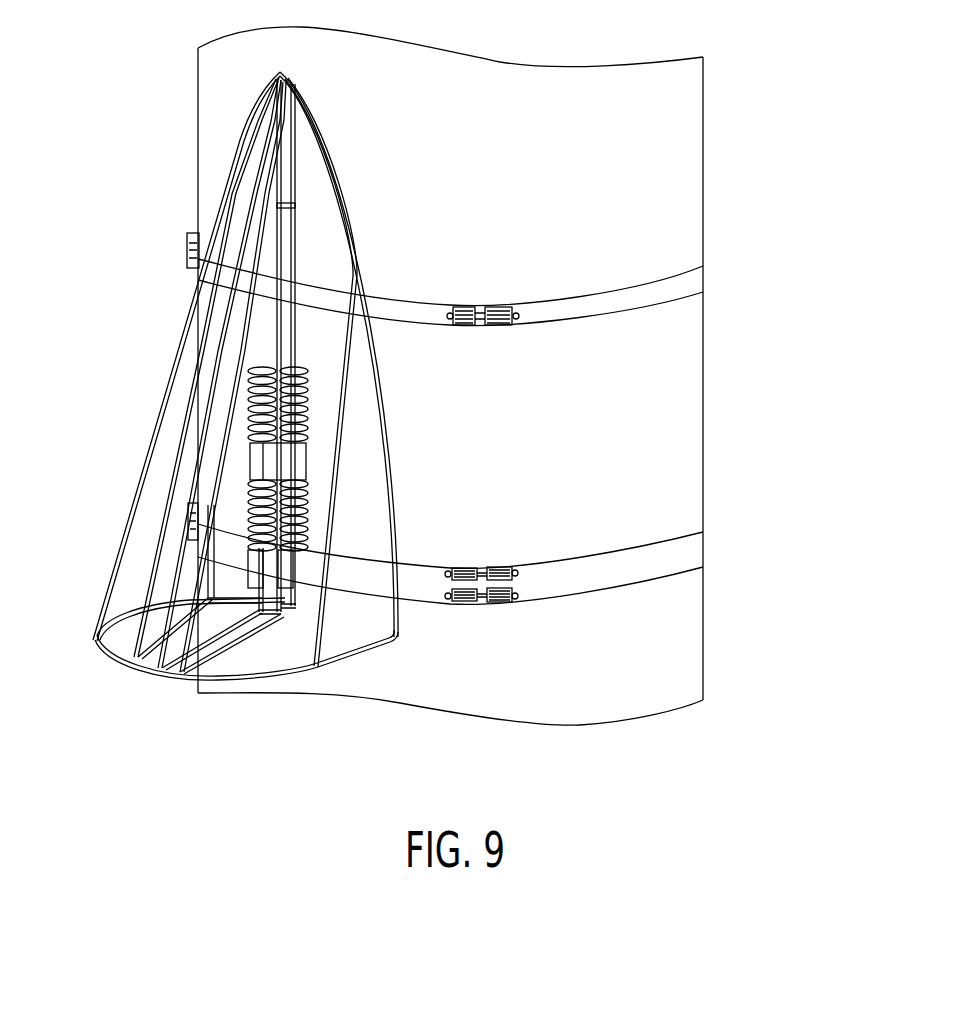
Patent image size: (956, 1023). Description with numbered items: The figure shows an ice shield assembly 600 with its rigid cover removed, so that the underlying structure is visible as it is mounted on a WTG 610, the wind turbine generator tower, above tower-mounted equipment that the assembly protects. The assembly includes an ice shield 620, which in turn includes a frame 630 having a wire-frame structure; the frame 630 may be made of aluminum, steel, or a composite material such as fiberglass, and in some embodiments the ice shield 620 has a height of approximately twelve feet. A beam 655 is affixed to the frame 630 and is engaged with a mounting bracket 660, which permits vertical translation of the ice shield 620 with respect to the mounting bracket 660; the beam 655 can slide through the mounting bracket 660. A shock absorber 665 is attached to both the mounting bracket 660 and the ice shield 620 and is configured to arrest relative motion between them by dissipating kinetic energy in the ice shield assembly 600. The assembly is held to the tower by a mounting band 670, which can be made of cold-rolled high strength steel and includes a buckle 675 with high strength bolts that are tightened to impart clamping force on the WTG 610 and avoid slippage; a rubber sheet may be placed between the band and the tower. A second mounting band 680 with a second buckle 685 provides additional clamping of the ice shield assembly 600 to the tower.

The ice shield assembly 600 is at (420, 386).
The WTG 610 is at (633, 158).
The ice shield 620 is at (229, 376).
The frame 630 is at (247, 178).
The beam 655 is at (289, 256).
The shock absorber 665 is at (307, 393).
The mounting bracket 660 is at (207, 553).
The second mounting band 680 is at (482, 279).
The second buckle 685 is at (478, 304).
The mounting band 670 is at (484, 553).
The buckle 675 is at (503, 572).